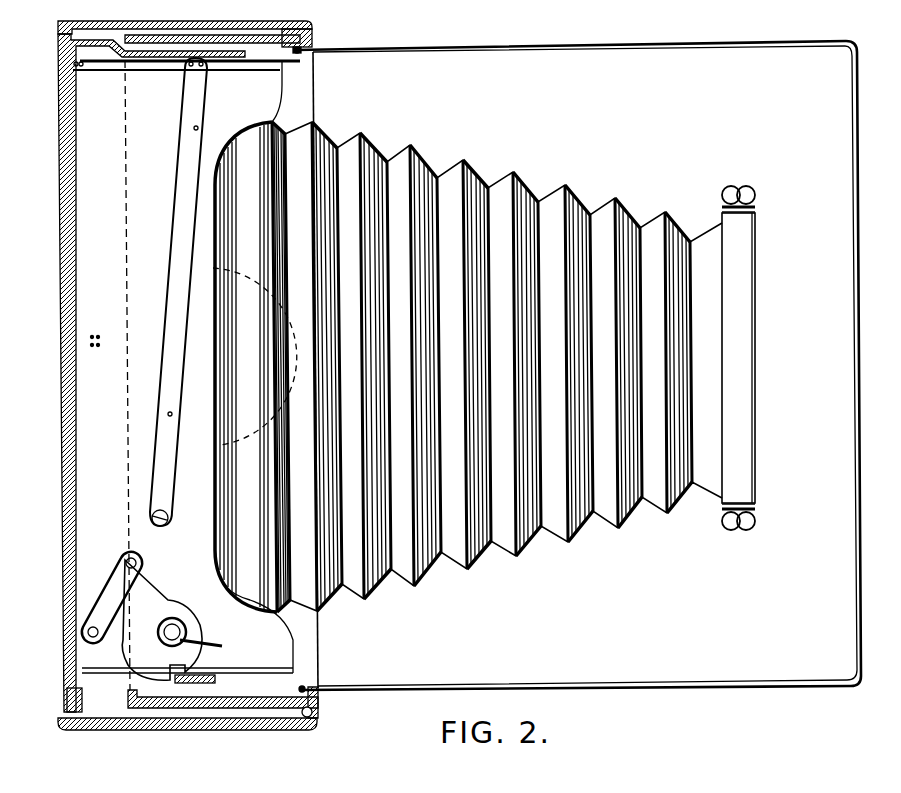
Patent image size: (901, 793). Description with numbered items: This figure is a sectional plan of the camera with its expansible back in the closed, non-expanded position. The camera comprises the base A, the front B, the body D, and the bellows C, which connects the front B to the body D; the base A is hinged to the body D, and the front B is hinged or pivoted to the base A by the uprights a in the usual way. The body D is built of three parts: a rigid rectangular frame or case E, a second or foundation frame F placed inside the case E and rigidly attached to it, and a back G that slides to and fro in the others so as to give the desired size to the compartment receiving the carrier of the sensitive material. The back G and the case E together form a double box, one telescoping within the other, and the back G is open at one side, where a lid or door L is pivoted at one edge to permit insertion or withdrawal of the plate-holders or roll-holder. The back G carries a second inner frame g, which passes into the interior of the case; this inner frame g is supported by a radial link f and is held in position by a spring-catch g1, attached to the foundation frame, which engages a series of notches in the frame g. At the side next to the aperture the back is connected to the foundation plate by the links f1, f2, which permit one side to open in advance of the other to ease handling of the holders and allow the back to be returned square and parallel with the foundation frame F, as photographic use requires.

The base A is at (577, 366).
The front B is at (738, 358).
The bellows C is at (468, 367).
The body D is at (185, 21).
The rigid frame or case E is at (219, 367).
The foundation frame F is at (189, 370).
The back G is at (140, 373).
The lid or door L is at (188, 723).
The uprights a is at (757, 210).
The radial link f is at (178, 278).
The link f1 is at (112, 597).
The link f2 is at (172, 620).
The inner frame g is at (168, 58).
The spring-catch g1 is at (300, 52).